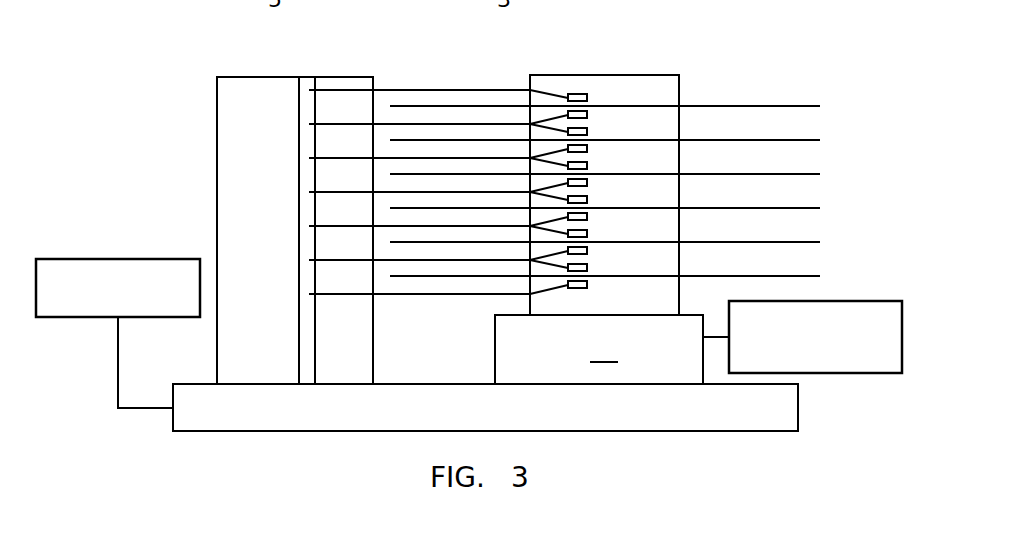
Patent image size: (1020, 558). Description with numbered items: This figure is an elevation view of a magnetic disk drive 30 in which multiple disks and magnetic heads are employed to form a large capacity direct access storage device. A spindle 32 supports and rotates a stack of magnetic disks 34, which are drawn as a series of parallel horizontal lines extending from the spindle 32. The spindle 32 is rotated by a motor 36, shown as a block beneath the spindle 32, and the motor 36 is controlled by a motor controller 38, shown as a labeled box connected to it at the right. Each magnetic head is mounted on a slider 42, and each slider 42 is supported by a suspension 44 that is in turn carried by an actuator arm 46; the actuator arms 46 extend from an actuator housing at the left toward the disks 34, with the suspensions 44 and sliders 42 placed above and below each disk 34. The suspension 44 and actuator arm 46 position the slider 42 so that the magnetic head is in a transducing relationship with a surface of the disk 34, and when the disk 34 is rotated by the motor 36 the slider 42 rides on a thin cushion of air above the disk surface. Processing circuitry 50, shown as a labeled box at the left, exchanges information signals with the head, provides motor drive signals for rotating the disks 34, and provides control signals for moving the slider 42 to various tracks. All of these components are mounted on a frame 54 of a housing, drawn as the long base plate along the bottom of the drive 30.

The magnetic disk drive 30 is at (758, 41).
The spindle 32 is at (657, 75).
The magnetic disk 34 is at (797, 107).
The motor 36 is at (599, 349).
The motor controller 38 is at (854, 373).
The slider 42 is at (590, 134).
The suspension 44 is at (580, 100).
The actuator arm 46 is at (476, 124).
The processing circuitry 50 is at (97, 259).
The frame 54 is at (300, 432).